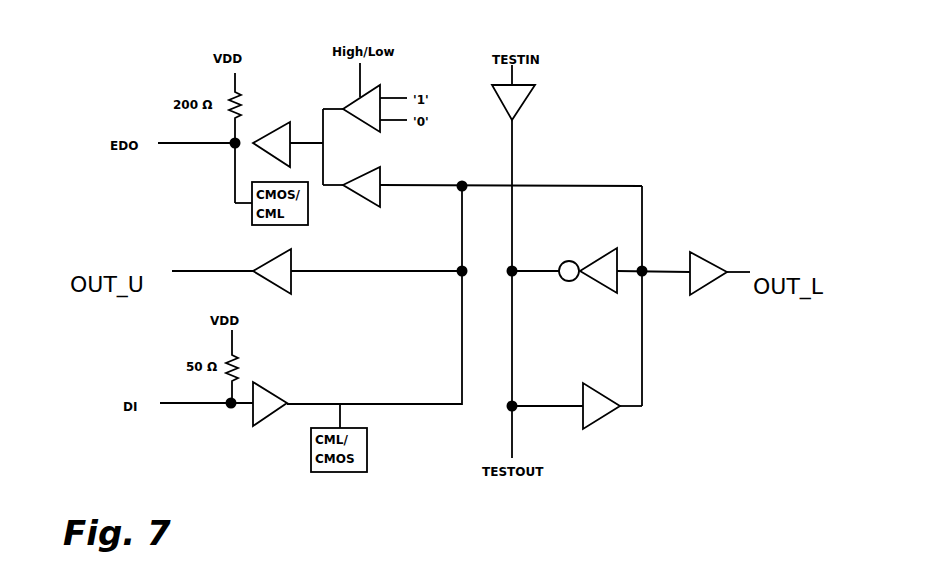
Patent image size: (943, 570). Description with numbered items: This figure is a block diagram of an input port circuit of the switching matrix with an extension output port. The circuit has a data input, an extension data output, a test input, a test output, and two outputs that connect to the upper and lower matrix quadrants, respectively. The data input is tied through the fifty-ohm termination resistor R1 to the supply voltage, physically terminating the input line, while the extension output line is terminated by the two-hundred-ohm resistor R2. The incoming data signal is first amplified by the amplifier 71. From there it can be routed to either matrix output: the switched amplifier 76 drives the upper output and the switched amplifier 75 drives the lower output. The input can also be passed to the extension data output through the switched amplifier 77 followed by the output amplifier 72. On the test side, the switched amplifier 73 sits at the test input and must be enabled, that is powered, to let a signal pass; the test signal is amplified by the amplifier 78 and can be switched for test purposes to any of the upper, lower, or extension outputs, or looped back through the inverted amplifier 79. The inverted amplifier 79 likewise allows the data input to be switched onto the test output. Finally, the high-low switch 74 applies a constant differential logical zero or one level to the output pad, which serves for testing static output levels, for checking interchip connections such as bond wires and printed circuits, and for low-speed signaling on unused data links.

The amplifier 71 is at (287, 392).
The output amplifier 72 is at (287, 135).
The switched amplifier 73 is at (536, 113).
The high-low switch 74 is at (385, 98).
The switched amplifier 75 is at (727, 293).
The switched amplifier 76 is at (300, 260).
The switched amplifier 77 is at (385, 175).
The amplifier 78 is at (620, 422).
The inverted amplifier 79 is at (583, 259).
The termination resistor R1 is at (258, 363).
The resistor R2 is at (260, 105).